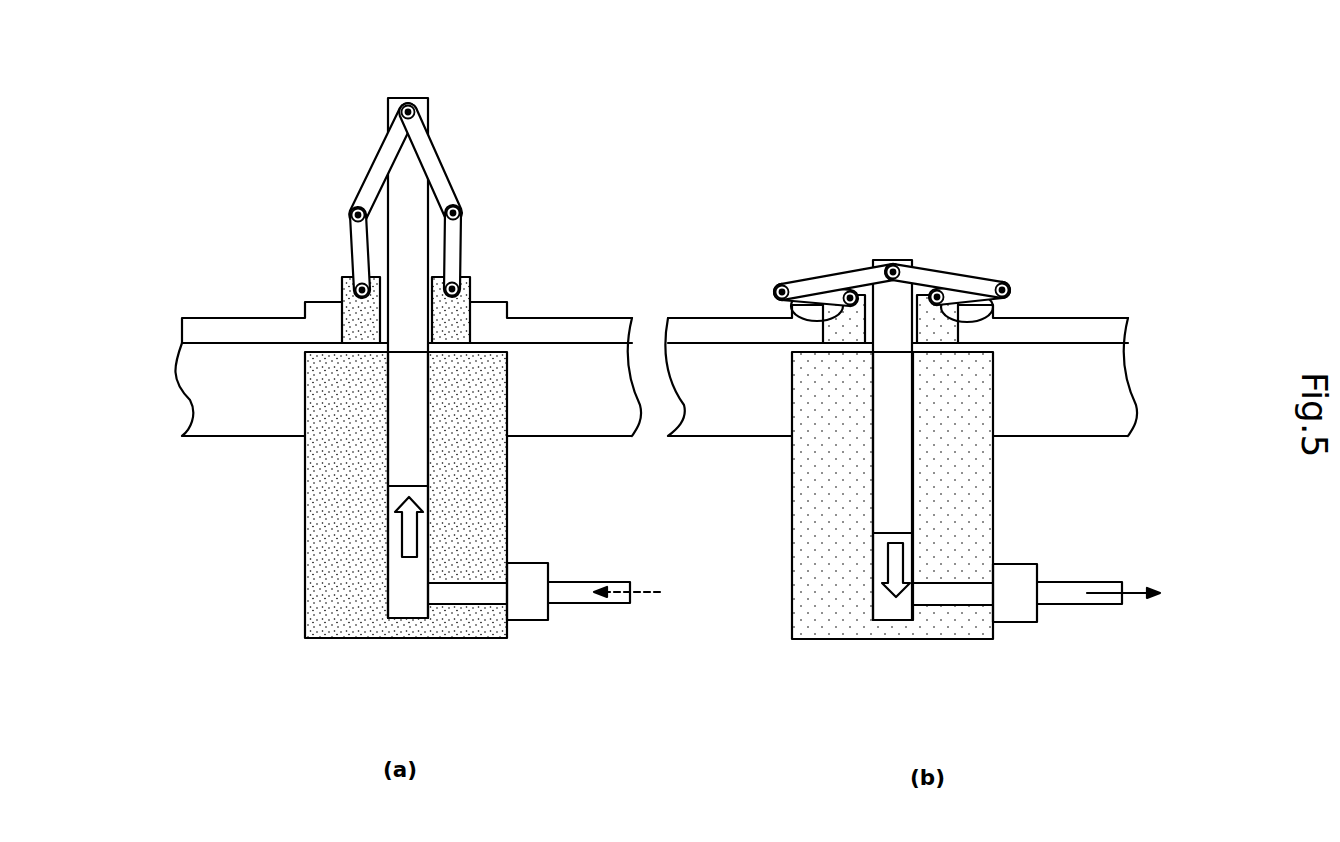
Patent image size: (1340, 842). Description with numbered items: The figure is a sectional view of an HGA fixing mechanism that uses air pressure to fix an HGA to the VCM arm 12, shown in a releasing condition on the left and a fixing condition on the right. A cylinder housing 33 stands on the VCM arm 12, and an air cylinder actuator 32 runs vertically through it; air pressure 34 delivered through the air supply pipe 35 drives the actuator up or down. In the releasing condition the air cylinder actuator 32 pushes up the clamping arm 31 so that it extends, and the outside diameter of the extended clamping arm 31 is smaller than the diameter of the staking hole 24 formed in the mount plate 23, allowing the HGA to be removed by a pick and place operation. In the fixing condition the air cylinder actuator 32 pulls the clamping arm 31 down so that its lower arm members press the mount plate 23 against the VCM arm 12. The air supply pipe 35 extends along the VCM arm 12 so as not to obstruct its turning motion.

The VCM arm 12 is at (225, 367).
The mount plate 23 is at (257, 330).
The staking hole 24 is at (342, 307).
The clamping arm 31 is at (382, 178).
The air cylinder actuator 32 is at (403, 400).
The cylinder housing 33 is at (345, 477).
The air pressure 34 is at (403, 567).
The air supply pipe 35 is at (572, 607).